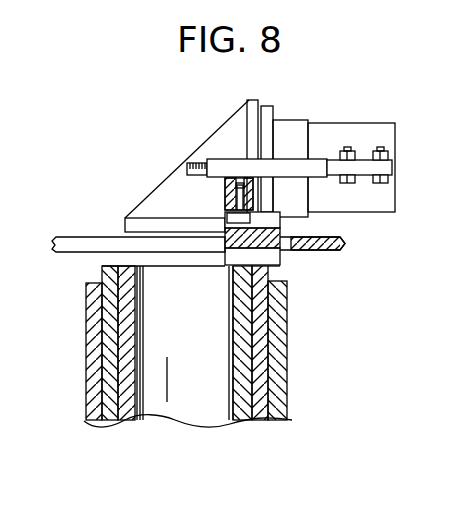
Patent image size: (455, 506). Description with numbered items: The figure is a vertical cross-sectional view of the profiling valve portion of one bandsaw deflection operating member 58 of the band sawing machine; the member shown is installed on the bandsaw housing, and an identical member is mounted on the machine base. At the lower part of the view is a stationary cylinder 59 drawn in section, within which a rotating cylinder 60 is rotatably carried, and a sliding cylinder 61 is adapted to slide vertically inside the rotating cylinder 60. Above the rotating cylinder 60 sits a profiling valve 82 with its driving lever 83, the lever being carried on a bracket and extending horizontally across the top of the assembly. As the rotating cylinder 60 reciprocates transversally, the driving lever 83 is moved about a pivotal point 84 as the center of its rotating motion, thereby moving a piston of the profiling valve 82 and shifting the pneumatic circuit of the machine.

The deflection operating member 58 is at (188, 371).
The stationary cylinder 59 is at (86, 359).
The rotating cylinder 60 is at (110, 412).
The sliding cylinder 61 is at (128, 423).
The profiling valve 82 is at (385, 132).
The driving lever 83 is at (292, 160).
The pivotal point 84 is at (392, 152).